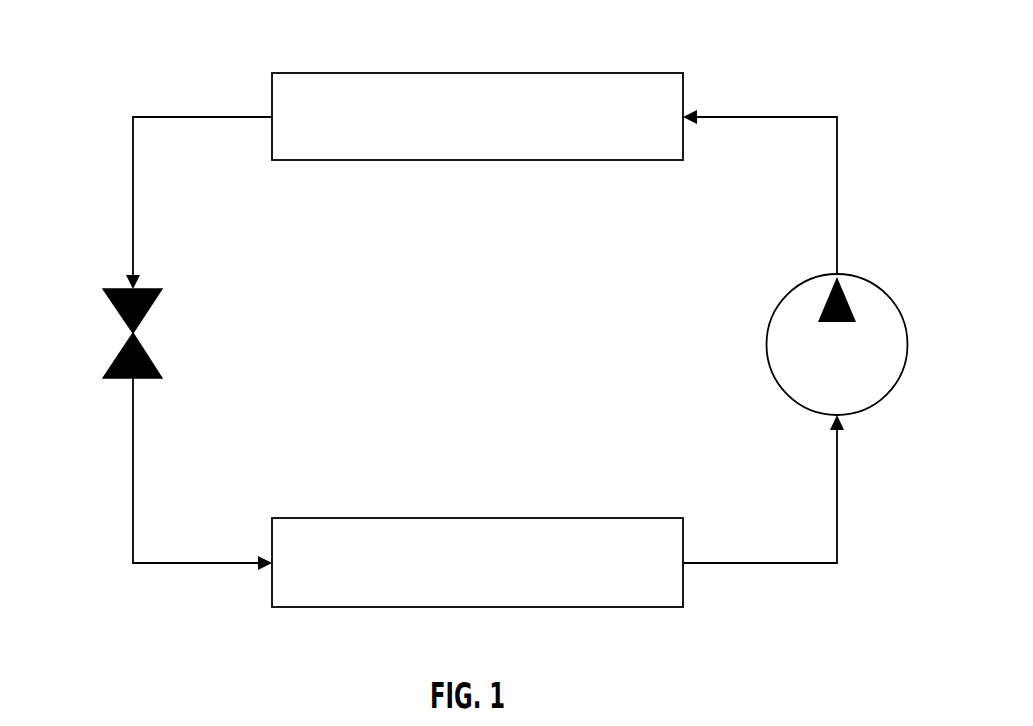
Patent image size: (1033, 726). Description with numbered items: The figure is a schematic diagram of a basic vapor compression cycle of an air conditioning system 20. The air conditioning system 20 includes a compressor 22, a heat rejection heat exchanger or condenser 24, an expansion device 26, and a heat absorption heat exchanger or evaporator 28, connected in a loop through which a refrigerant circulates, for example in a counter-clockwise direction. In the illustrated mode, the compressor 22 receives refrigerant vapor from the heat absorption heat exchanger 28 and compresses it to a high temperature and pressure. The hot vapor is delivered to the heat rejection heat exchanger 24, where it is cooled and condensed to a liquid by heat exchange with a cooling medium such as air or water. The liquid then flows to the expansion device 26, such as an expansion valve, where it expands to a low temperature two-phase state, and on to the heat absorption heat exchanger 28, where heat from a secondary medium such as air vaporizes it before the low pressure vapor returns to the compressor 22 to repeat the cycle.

The air conditioning system 20 is at (96, 80).
The compressor 22 is at (903, 350).
The heat rejection heat exchanger 24 is at (597, 80).
The expansion device 26 is at (113, 310).
The heat absorption heat exchanger 28 is at (597, 525).